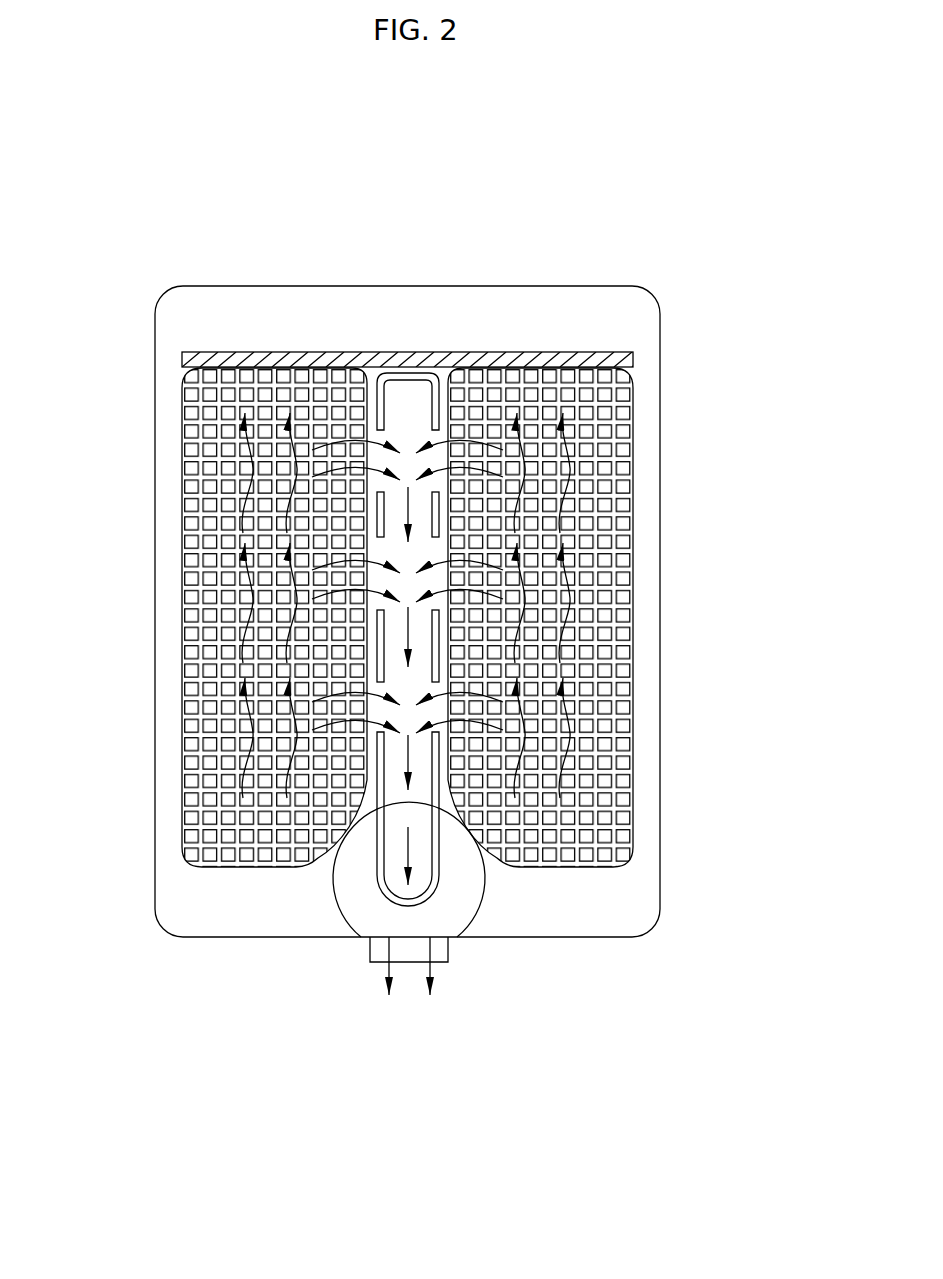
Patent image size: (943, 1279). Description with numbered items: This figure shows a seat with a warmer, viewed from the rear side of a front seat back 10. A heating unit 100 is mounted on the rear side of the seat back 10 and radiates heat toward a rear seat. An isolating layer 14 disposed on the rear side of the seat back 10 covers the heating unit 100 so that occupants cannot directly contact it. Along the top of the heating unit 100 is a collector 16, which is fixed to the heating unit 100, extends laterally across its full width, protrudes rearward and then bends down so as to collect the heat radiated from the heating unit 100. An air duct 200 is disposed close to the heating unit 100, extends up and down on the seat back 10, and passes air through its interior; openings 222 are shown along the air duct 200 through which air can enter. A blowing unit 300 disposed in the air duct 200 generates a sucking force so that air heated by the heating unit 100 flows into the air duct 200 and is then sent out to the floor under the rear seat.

The front seat back 10 is at (560, 315).
The isolating layer 14 is at (612, 490).
The collector 16 is at (372, 350).
The heating unit 100 is at (625, 622).
The air duct 200 is at (410, 812).
The openings 222 is at (396, 558).
The blowing unit 300 is at (355, 897).